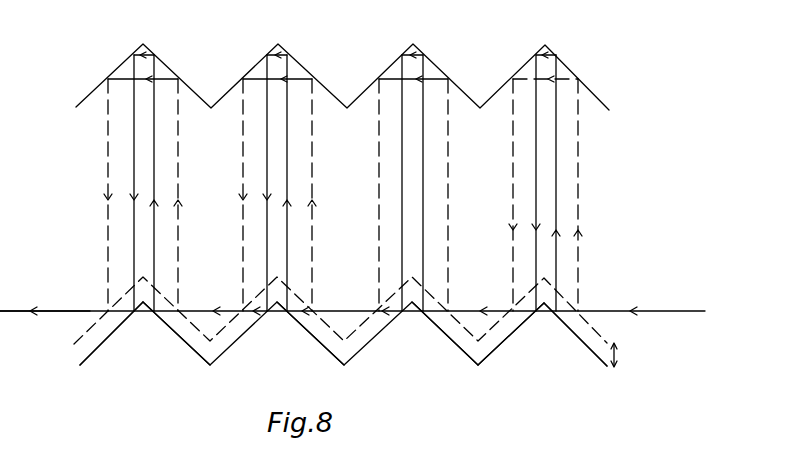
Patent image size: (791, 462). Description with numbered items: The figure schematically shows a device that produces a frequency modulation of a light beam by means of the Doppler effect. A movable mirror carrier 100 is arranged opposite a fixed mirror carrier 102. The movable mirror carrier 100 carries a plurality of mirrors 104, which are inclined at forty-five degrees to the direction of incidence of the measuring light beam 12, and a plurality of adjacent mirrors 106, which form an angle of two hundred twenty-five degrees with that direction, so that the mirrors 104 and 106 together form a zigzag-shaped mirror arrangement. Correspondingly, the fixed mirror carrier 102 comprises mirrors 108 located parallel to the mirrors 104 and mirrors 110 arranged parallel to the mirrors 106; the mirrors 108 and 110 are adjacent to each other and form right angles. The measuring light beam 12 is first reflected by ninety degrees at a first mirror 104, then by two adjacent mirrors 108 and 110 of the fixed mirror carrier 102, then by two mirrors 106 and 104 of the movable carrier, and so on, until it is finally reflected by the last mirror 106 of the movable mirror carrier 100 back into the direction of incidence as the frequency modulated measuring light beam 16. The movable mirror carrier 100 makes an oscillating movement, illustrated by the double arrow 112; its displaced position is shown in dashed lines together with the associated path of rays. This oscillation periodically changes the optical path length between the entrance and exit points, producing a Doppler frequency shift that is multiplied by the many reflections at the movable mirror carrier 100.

The measuring light beam 12 is at (667, 311).
The frequency modulated measuring light beam 16 is at (57, 309).
The movable mirror carrier 100 is at (452, 349).
The fixed mirror carrier 102 is at (437, 63).
The mirror 104 is at (177, 336).
The mirror 106 is at (110, 335).
The mirror 108 is at (170, 70).
The mirror 110 is at (124, 62).
The double arrow 112 is at (618, 355).